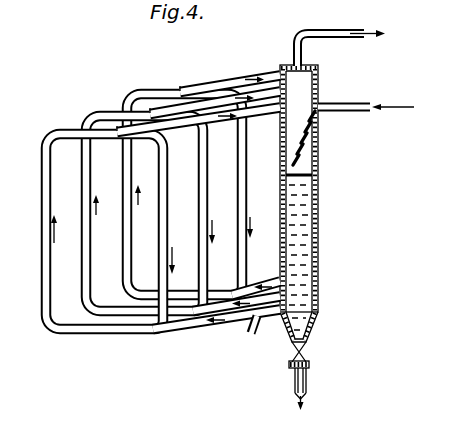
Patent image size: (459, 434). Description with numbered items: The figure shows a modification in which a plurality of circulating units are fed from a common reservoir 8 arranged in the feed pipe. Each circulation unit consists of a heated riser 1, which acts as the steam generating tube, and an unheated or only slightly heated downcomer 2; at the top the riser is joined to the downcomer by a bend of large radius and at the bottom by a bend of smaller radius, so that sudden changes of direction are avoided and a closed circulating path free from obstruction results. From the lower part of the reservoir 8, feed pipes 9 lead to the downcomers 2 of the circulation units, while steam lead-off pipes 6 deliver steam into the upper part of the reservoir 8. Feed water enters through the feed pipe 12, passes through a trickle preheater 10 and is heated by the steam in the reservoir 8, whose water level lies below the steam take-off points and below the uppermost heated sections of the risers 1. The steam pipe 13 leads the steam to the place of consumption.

The heated riser 1 is at (85, 263).
The downcomer 2 is at (238, 195).
The steam lead-off pipes 6 is at (250, 92).
The reservoir 8 is at (321, 257).
The feed pipes 9 is at (216, 319).
The trickle preheater 10 is at (313, 149).
The feed pipe 12 is at (346, 105).
The steam pipe 13 is at (318, 33).